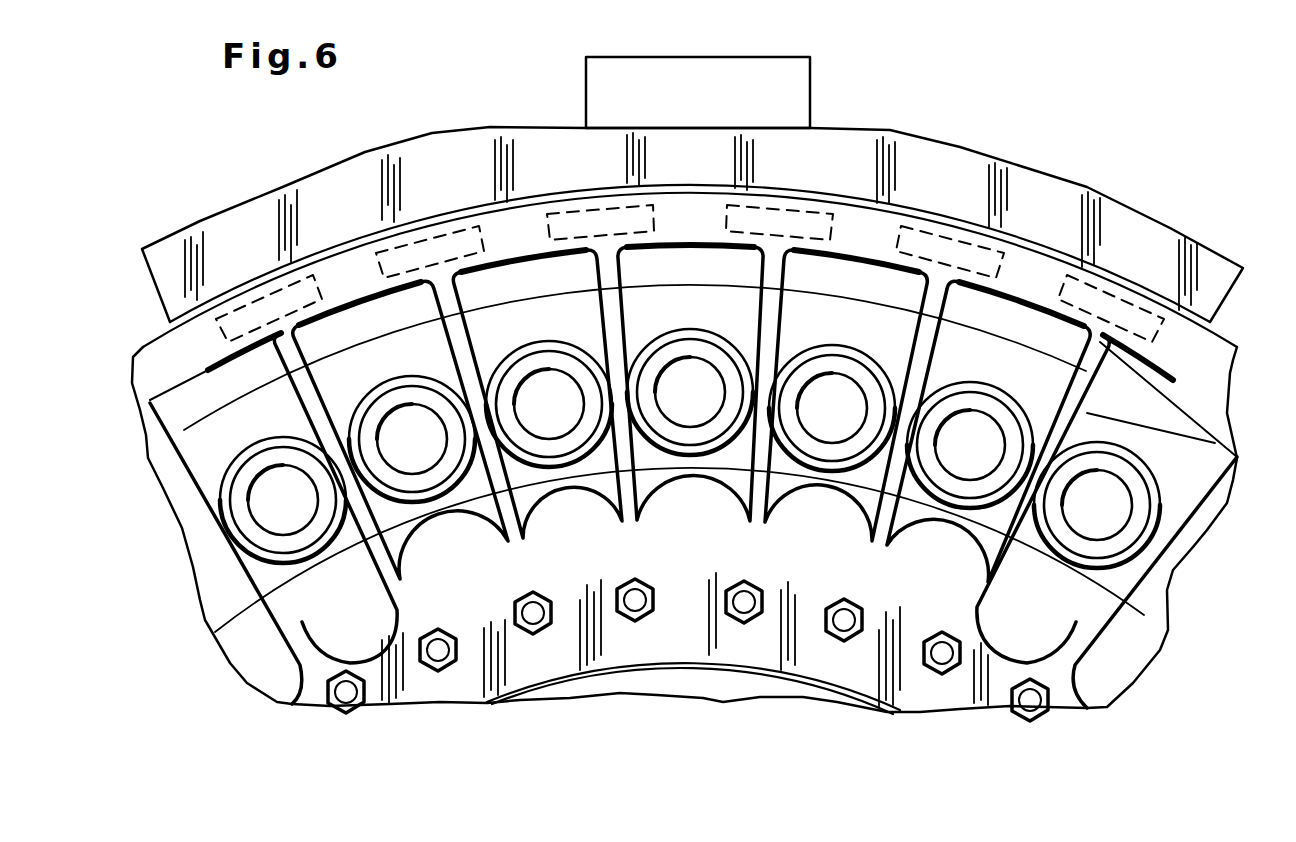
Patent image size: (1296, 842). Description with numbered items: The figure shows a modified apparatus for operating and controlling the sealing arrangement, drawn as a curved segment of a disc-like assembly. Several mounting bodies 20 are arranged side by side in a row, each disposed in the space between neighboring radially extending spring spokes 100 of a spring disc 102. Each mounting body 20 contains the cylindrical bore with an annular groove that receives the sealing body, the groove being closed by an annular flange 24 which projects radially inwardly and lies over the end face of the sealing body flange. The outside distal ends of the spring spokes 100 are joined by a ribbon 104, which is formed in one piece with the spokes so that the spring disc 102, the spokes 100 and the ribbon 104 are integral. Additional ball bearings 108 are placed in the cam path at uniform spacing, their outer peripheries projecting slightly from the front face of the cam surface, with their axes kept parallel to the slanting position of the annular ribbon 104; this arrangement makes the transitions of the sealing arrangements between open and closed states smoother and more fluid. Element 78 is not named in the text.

The ribbon 104 is at (885, 235).
The ball bearings 108 is at (830, 225).
The spring spokes 100 is at (510, 524).
The annular flange 24 is at (566, 346).
The pole core 78 is at (523, 382).
The mounting body 20 is at (656, 340).
The spring disc 102 is at (697, 651).